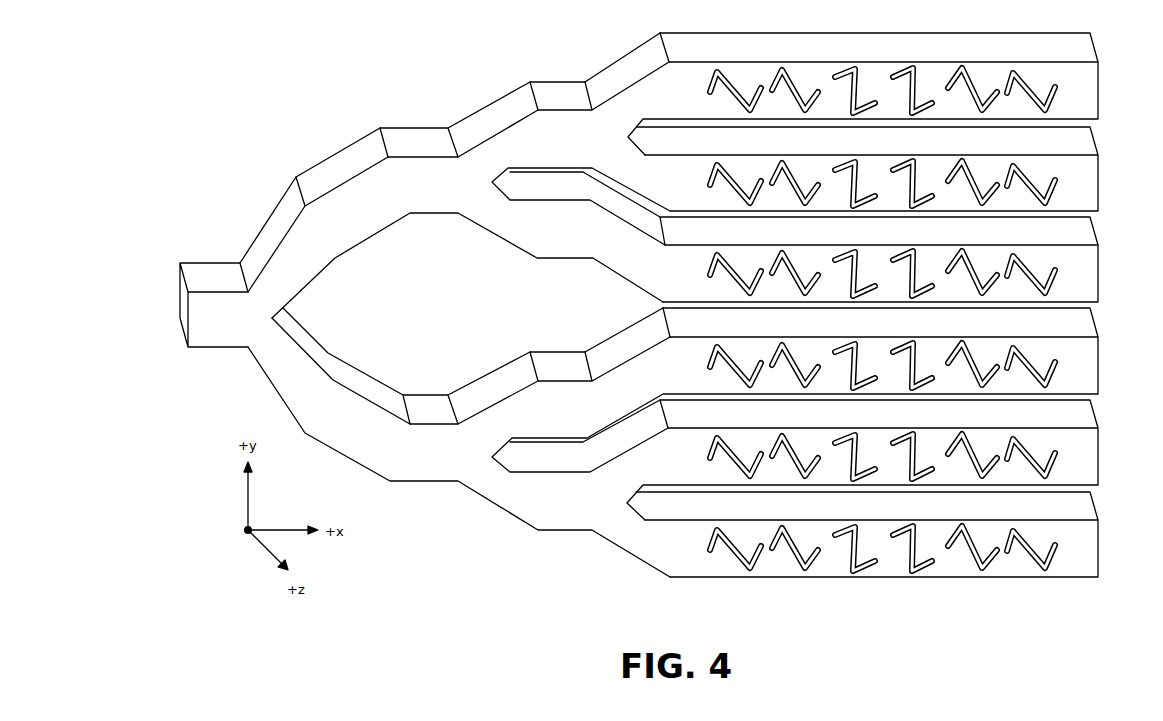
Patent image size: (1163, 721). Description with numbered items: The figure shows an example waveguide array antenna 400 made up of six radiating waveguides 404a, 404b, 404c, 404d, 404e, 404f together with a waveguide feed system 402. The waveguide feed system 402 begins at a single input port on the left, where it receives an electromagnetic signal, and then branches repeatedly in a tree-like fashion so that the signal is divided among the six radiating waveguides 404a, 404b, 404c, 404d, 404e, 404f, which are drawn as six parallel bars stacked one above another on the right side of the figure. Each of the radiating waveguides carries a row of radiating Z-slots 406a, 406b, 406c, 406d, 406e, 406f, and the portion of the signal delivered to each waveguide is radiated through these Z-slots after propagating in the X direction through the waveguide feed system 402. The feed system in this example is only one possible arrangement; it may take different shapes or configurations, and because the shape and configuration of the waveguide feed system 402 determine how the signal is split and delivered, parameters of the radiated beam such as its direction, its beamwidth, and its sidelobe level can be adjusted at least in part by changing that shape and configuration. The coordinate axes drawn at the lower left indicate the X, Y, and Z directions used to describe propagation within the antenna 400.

The waveguide array antenna 400 is at (310, 60).
The waveguide feed system 402 is at (343, 147).
The radiating waveguide 404a is at (1100, 90).
The radiating waveguide 404b is at (1100, 182).
The radiating waveguide 404c is at (1100, 272).
The radiating waveguide 404d is at (1100, 368).
The radiating waveguide 404e is at (1100, 457).
The radiating waveguide 404f is at (1100, 547).
The radiating Z-slot 406a is at (728, 70).
The radiating Z-slot 406b is at (795, 69).
The radiating Z-slot 406c is at (840, 67).
The radiating Z-slot 406d is at (897, 68).
The radiating Z-slot 406e is at (973, 68).
The radiating Z-slot 406f is at (1031, 70).